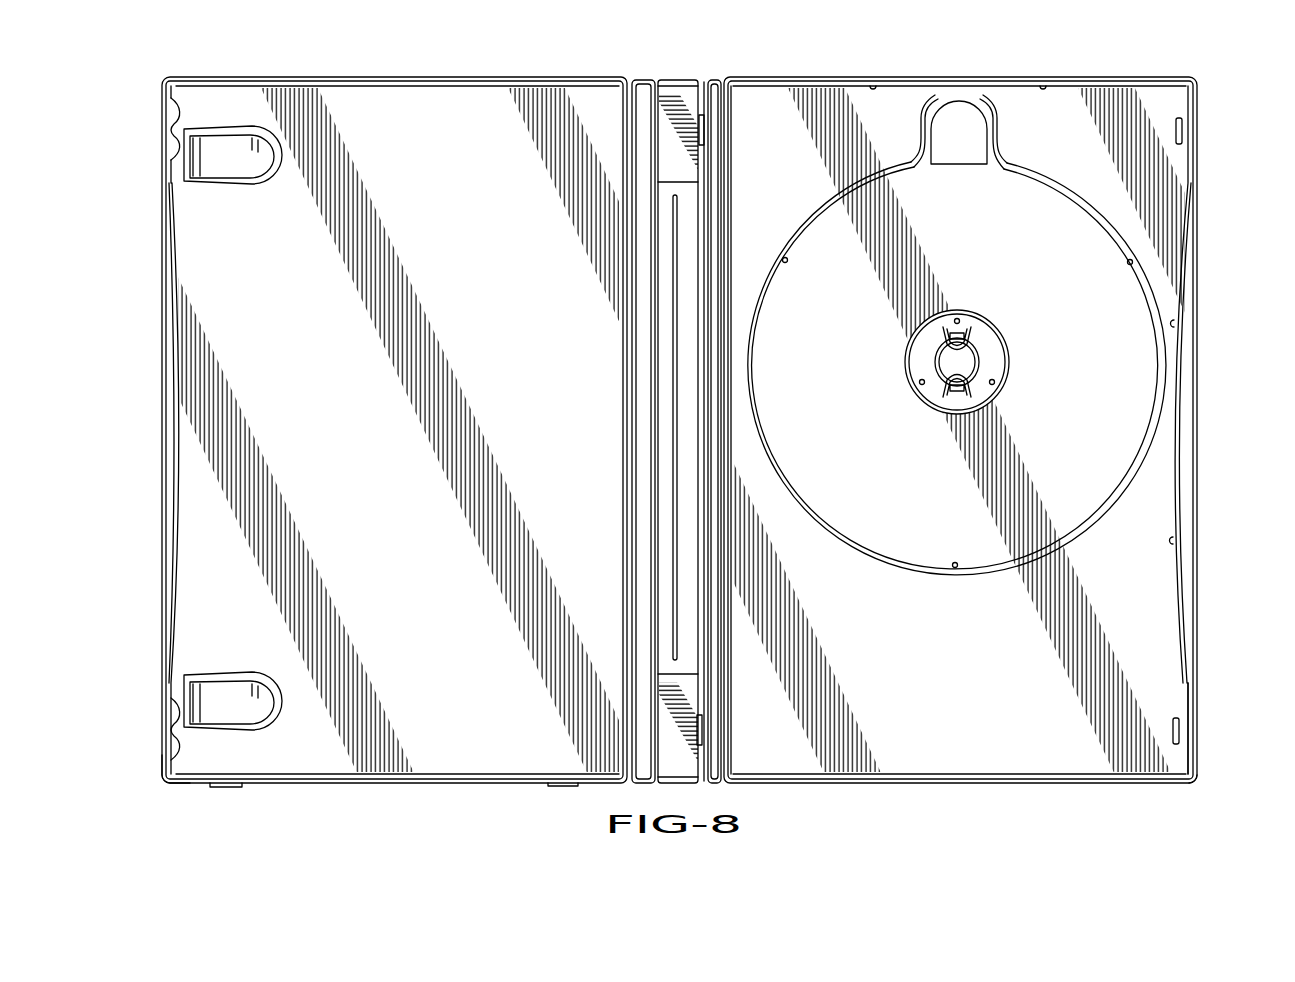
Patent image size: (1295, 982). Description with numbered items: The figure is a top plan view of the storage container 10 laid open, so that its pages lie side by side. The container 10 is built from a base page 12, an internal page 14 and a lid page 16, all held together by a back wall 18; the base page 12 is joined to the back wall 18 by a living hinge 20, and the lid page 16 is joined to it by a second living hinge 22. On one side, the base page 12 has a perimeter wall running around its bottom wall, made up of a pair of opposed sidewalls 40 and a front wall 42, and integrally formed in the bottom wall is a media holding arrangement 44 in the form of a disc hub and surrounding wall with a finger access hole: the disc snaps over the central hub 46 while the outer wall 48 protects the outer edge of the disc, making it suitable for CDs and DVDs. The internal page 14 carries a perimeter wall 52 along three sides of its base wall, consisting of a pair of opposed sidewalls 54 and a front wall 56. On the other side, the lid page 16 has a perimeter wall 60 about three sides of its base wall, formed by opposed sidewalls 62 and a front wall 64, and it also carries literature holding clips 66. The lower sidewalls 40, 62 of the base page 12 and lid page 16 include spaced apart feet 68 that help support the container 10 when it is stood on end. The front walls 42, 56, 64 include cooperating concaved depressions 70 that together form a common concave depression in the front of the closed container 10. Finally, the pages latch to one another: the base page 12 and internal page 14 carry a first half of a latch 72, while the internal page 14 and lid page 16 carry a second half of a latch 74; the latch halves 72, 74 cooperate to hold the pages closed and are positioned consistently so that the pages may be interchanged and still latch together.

The storage container 10 is at (1140, 800).
The base page 12 is at (1200, 762).
The internal page 14 is at (652, 357).
The lid page 16 is at (430, 72).
The back wall 18 is at (720, 74).
The living hinge 20 is at (722, 690).
The second living hinge 22 is at (628, 462).
The sidewalls 40 is at (1135, 80).
The front wall 42 is at (1194, 703).
The media holding arrangement 44 is at (913, 584).
The hub 46 is at (975, 362).
The outer wall 48 is at (995, 578).
The perimeter wall 52 is at (712, 158).
The sidewalls 54 is at (682, 80).
The front wall 56 is at (662, 743).
The perimeter wall 60 is at (410, 790).
The sidewalls 62 is at (358, 78).
The front wall 64 is at (160, 755).
The literature holding clips 66 is at (240, 163).
The feet 68 is at (232, 790).
The concaved depressions 70 is at (175, 462).
The first half of latch 72 is at (1200, 135).
The second half of latch 74 is at (174, 128).